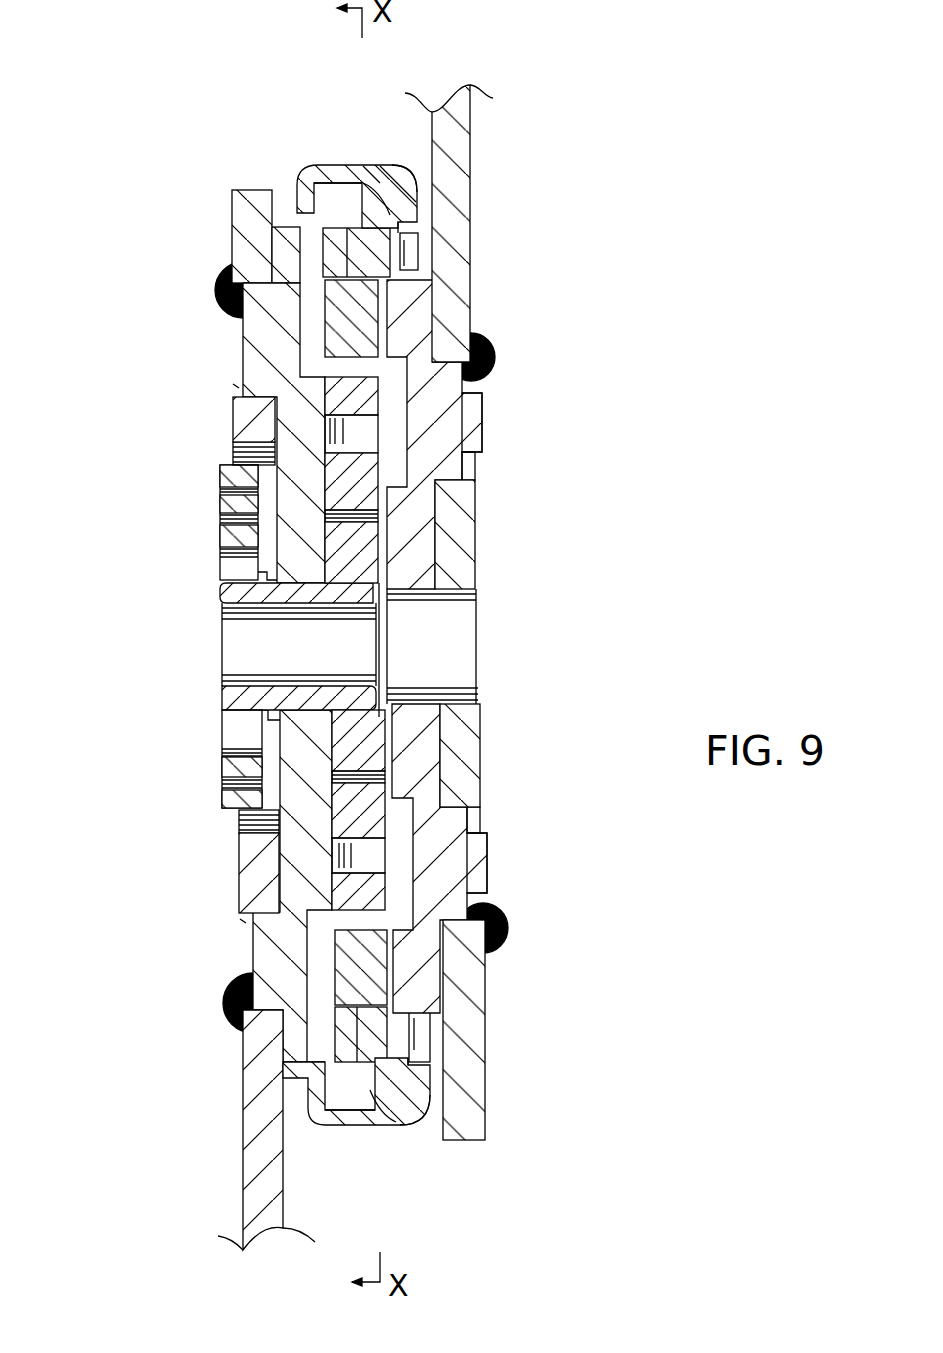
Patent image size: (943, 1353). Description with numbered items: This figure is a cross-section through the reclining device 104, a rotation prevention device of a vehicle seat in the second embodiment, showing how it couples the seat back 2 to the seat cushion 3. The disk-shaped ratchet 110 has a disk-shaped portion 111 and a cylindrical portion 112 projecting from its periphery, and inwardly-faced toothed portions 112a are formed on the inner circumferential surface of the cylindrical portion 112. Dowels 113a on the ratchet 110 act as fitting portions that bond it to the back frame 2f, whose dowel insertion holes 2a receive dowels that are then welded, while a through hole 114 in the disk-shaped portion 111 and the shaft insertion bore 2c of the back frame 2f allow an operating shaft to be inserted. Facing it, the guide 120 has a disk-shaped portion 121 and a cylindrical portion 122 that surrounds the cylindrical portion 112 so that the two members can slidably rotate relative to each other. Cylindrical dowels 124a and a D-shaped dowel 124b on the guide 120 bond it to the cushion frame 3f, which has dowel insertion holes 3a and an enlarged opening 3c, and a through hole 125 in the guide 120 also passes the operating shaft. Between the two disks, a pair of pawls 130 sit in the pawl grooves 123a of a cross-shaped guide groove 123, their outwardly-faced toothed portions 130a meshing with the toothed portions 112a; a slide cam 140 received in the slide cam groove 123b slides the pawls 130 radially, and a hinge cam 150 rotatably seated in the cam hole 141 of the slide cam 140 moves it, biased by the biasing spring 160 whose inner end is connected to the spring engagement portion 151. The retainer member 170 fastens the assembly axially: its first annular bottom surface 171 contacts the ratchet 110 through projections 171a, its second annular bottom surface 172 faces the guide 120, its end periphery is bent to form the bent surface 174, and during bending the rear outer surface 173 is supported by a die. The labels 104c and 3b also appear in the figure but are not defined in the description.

The reclining device 104 is at (290, 125).
The bent surface 174 is at (284, 257).
The cylindrical dowels 124a is at (258, 332).
The D-shaped dowel 124b is at (262, 956).
The disk-shaped portion 121 is at (182, 508).
The enlarged opening 3c is at (258, 456).
The biasing spring 160 is at (234, 538).
The hinge cam 150 is at (173, 568).
The motor portion 104c is at (173, 568).
The dowel insertion holes 3a is at (236, 386).
The shaft portion 3b is at (243, 921).
The spring engagement portion 151 is at (239, 596).
The through hole 125 is at (298, 639).
The guide groove 123 is at (230, 630).
The pawl grooves 123a is at (332, 400).
The slide cam groove 123b is at (345, 737).
The cam hole 141 is at (287, 768).
The slide cam 140 is at (239, 813).
The seat cushion 3 is at (229, 1130).
The cushion frame 3f is at (262, 1078).
The guide 120 is at (334, 318).
The pawls 130 is at (236, 262).
The inwardly-faced toothed portions 112a is at (357, 276).
The outwardly-faced toothed portions 130a is at (423, 637).
The cylindrical portion 122 is at (335, 207).
The second annular bottom surface 172 is at (357, 183).
The retainer member 170 is at (396, 189).
The rear outer surface 173 is at (420, 182).
The first annular bottom surface 171 is at (405, 205).
The projections 171a is at (407, 247).
The cylindrical portion 112 is at (400, 233).
The ratchet 110 is at (419, 321).
The dowels 113a is at (470, 416).
The dowel insertion holes 2a is at (468, 465).
The disk-shaped portion 111 is at (415, 523).
The through hole 114 is at (420, 627).
The shaft insertion bore 2c is at (455, 667).
The seat back 2 is at (484, 612).
The back frame 2f is at (450, 125).